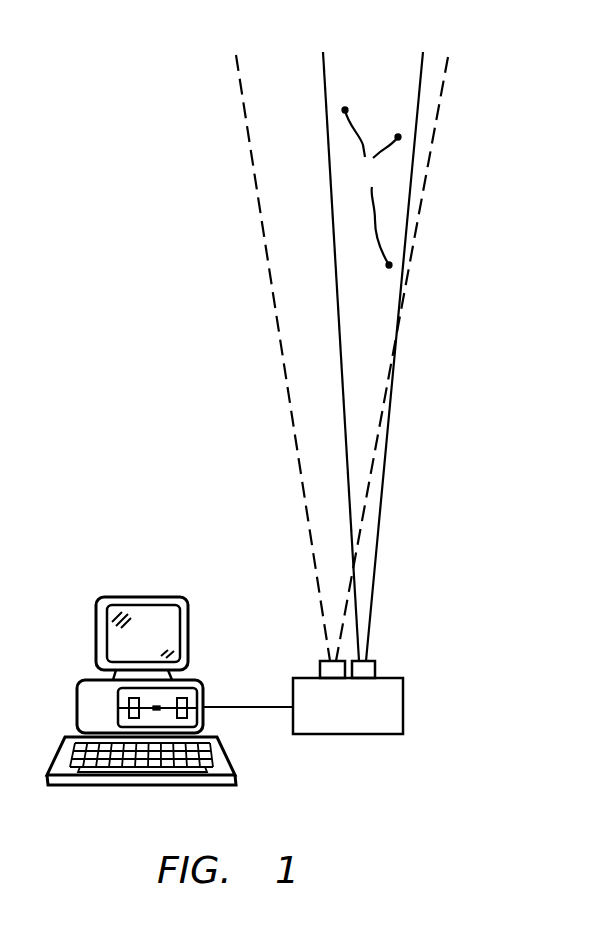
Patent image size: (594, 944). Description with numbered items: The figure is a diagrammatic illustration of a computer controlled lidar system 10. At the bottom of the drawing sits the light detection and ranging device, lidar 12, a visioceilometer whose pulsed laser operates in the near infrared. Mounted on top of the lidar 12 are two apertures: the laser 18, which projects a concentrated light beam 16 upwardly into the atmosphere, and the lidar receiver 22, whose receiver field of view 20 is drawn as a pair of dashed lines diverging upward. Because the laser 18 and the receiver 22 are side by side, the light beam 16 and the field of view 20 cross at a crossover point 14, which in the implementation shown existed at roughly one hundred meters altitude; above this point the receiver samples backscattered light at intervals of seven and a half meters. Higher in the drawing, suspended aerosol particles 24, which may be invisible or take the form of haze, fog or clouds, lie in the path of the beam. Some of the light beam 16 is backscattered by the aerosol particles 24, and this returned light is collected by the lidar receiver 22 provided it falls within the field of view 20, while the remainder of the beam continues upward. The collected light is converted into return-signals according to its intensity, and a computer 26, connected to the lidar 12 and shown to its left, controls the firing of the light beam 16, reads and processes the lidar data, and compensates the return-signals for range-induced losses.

The computer controlled lidar system 10 is at (150, 392).
The lidar device 12 is at (404, 702).
The crossover point 14 is at (353, 560).
The light beam 16 is at (382, 480).
The laser 18 is at (375, 670).
The field of view 20 is at (297, 437).
The lidar receiver 22 is at (320, 670).
The aerosol particles 24 is at (371, 187).
The computer 26 is at (203, 685).